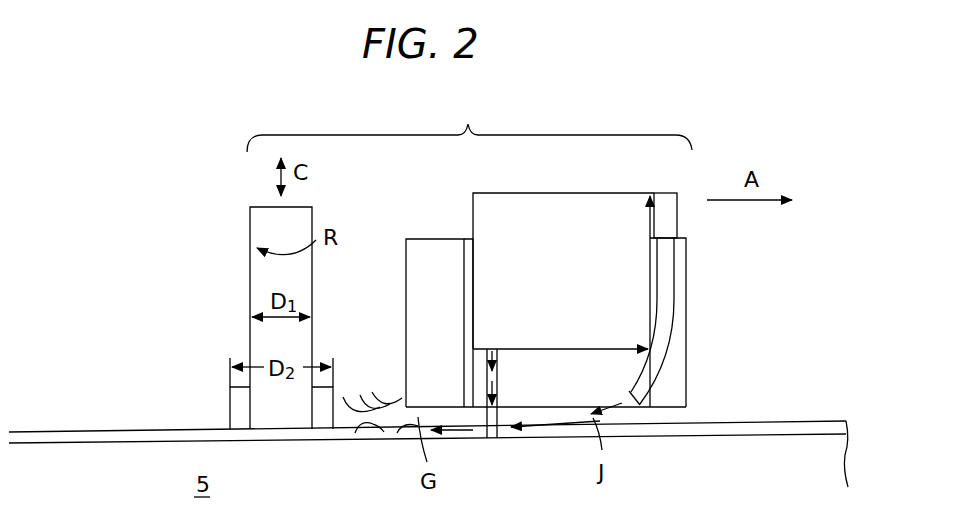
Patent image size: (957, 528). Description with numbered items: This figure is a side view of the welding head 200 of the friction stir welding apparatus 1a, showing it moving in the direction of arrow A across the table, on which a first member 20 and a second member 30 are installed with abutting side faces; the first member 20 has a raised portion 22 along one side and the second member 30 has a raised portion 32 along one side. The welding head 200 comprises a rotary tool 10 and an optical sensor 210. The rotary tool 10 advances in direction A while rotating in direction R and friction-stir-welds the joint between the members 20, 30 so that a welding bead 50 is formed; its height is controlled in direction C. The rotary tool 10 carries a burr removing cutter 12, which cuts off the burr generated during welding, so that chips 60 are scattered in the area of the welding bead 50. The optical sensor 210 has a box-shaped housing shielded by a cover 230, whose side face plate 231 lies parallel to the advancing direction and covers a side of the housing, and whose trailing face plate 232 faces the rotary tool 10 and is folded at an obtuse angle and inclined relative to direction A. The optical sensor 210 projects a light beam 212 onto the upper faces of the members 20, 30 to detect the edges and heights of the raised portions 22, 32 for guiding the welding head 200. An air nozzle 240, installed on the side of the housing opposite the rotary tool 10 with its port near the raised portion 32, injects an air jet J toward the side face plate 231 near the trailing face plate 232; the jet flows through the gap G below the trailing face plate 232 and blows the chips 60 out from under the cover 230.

The friction stir welding apparatus 1a is at (562, 105).
The welding head 200 is at (469, 119).
The rotary tool 10 is at (258, 283).
The burr removing cutter 12 is at (237, 397).
The welding bead 50 is at (428, 430).
The raised portion 22 is at (765, 423).
The raised portion 32 is at (638, 424).
The first member 20 is at (727, 437).
The second member 30 is at (638, 436).
The cover 230 is at (452, 222).
The trailing face plate 232 is at (430, 257).
The side face plate 231 is at (470, 250).
The optical sensor 210 is at (609, 212).
The air nozzle 240 is at (668, 332).
The light beam 212 is at (488, 440).
The chips 60 is at (363, 440).